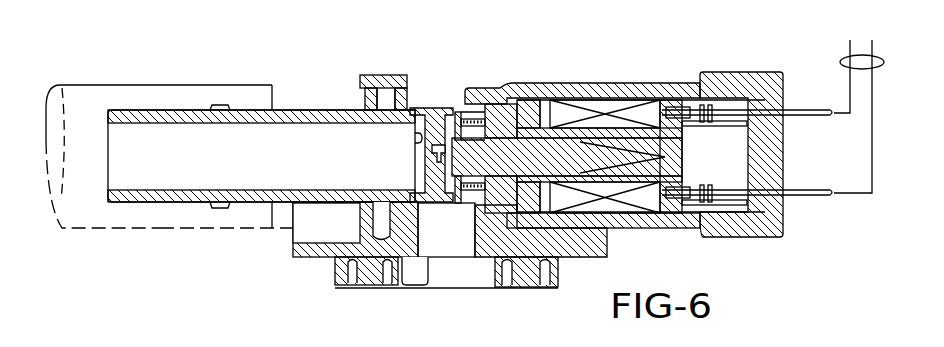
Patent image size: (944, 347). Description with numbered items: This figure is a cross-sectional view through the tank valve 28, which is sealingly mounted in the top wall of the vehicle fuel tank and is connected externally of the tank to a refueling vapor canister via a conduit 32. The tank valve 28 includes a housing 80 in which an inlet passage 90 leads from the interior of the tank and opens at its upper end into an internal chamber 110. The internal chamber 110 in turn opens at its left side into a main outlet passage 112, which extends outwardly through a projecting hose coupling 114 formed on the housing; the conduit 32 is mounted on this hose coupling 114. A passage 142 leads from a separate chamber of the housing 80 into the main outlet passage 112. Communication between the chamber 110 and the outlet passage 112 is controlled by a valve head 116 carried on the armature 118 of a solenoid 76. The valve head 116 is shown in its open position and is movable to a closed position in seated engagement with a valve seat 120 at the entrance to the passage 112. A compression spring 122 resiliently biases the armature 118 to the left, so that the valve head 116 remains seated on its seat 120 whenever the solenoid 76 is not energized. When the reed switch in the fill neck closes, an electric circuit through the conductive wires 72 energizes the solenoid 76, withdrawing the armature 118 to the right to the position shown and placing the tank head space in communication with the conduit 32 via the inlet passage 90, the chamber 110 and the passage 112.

The tank valve 28 is at (368, 30).
The conduit 32 is at (163, 44).
The conductive wires 72 is at (840, 63).
The solenoid 76 is at (608, 106).
The housing 80 is at (315, 258).
The inlet passage 90 is at (430, 248).
The internal chamber 110 is at (462, 116).
The main outlet passage 112 is at (207, 179).
The hose coupling 114 is at (303, 70).
The valve head 116 is at (428, 112).
The armature 118 is at (562, 148).
The valve seat 120 is at (416, 140).
The compression spring 122 is at (470, 192).
The passage 142 is at (383, 193).